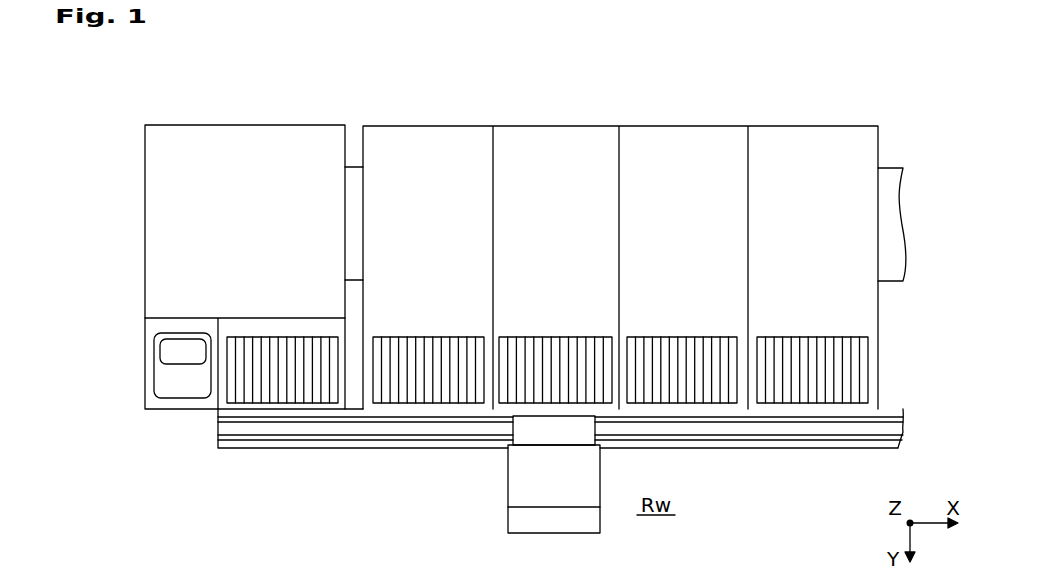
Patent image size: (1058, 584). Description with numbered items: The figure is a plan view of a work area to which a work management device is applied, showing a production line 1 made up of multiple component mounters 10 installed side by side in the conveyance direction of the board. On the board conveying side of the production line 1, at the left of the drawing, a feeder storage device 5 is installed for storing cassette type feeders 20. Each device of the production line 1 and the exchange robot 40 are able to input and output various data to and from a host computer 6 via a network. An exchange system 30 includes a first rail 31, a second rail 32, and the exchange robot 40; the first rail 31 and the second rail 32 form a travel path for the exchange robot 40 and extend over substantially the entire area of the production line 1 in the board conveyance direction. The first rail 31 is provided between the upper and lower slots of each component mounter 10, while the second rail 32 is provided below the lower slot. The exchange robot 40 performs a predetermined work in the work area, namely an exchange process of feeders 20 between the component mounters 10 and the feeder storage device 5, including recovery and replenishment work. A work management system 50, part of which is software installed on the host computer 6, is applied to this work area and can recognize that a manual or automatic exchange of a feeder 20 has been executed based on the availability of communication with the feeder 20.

The production line 1 is at (168, 97).
The feeder storage device 5 is at (225, 313).
The host computer 6 is at (163, 383).
The component mounter 10 is at (421, 140).
The feeder 20 is at (278, 395).
The exchange system 30 is at (560, 484).
The first rail 31 is at (705, 428).
The second rail 32 is at (762, 445).
The exchange robot 40 is at (497, 495).
The work management system 50 is at (147, 491).